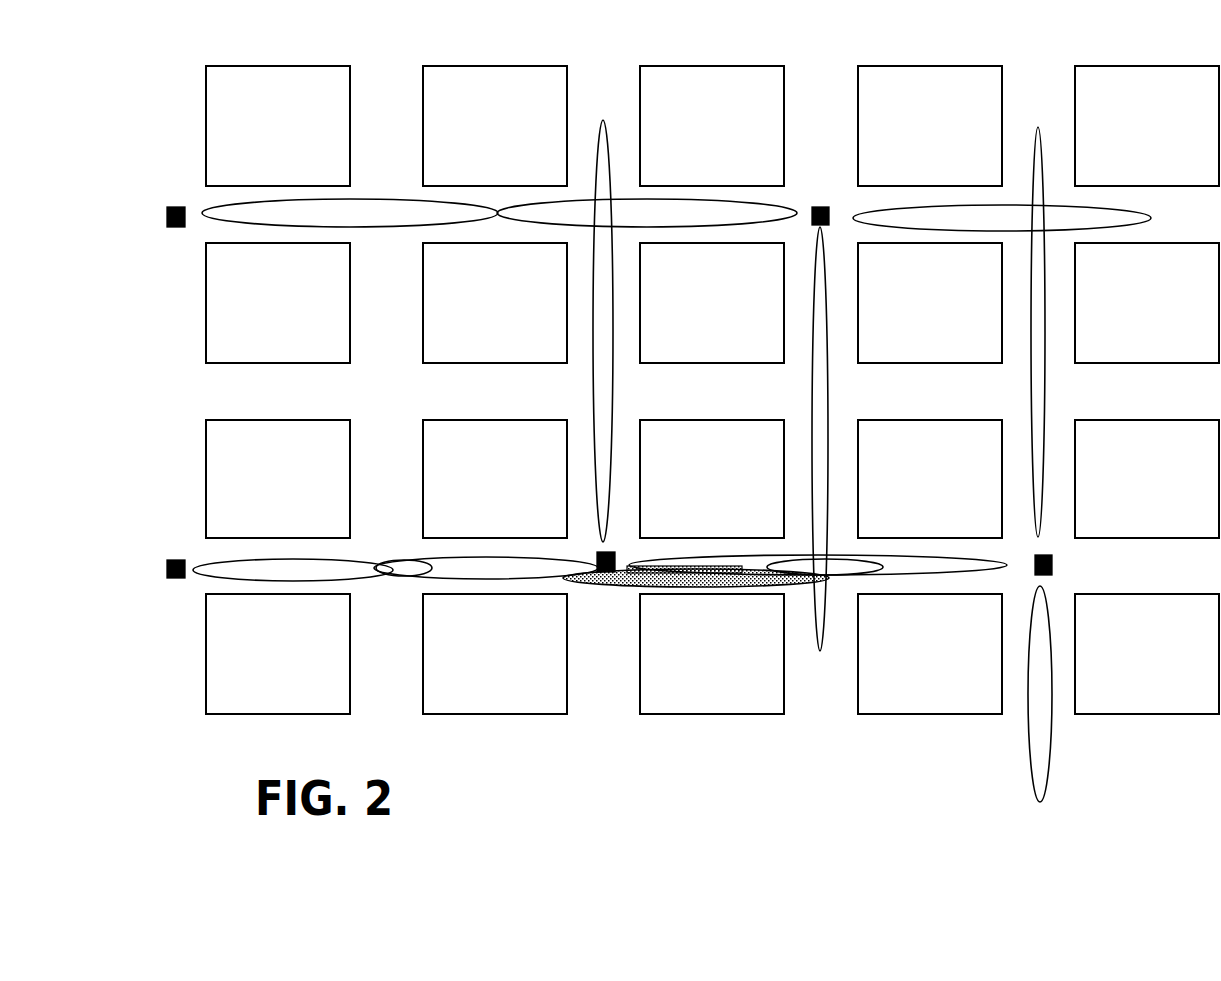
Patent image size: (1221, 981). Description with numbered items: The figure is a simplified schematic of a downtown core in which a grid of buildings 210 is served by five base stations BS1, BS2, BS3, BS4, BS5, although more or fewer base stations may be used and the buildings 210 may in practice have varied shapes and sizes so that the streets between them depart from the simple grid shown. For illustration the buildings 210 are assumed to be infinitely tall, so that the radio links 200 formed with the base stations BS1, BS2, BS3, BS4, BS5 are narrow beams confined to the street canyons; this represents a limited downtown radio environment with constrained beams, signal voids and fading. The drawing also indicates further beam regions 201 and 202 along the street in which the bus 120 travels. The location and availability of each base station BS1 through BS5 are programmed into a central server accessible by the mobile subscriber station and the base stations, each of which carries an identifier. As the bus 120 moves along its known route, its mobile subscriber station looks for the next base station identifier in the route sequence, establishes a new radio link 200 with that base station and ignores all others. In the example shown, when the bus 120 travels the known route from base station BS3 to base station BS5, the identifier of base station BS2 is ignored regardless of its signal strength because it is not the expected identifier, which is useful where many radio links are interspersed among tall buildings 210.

The buildings 210 is at (933, 64).
The radio links 200 is at (596, 158).
The shaded beam 201 is at (595, 583).
The vertical beam 202 is at (795, 583).
The bus 120 is at (643, 583).
The base station BS1 is at (173, 197).
The base station BS2 is at (820, 195).
The base station BS3 is at (173, 550).
The base station BS4 is at (631, 555).
The base station BS5 is at (1074, 563).